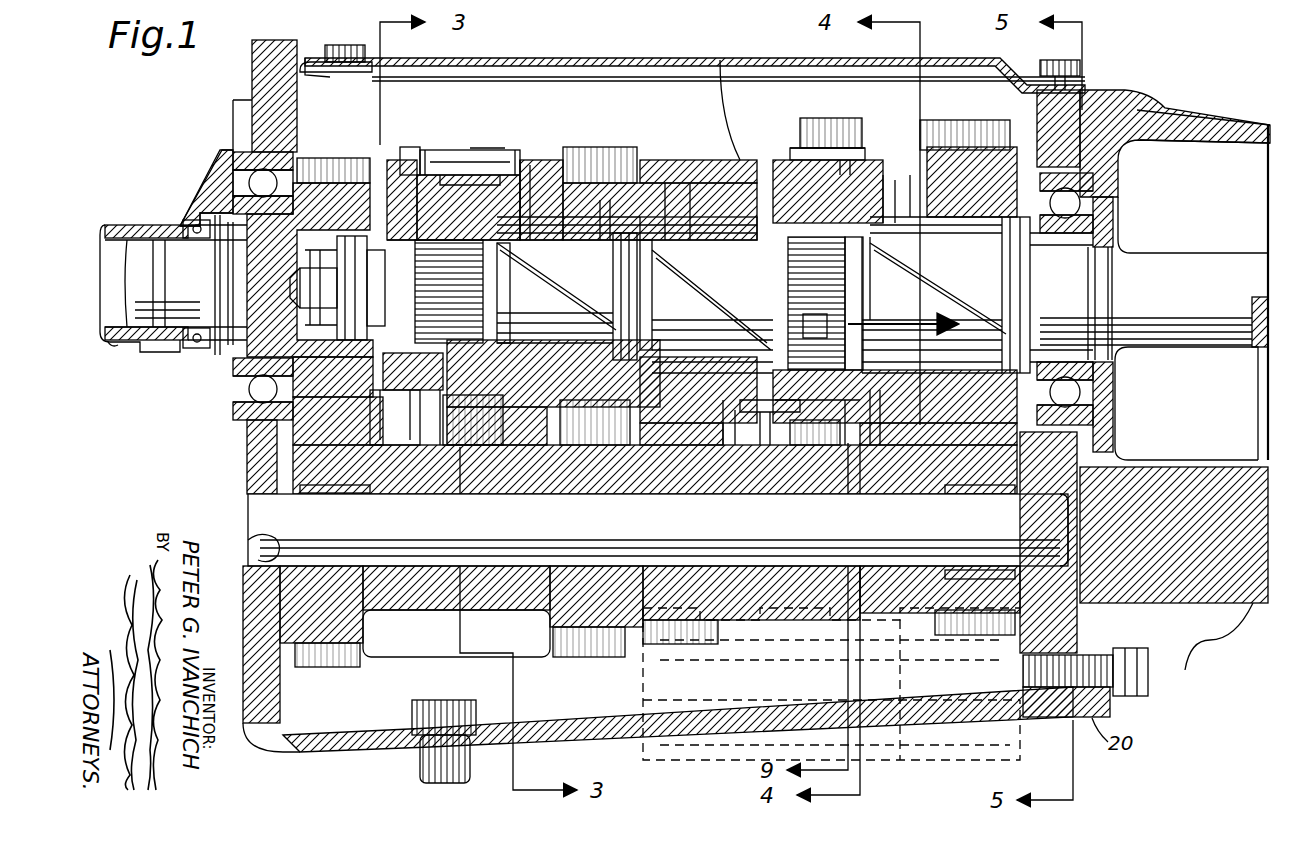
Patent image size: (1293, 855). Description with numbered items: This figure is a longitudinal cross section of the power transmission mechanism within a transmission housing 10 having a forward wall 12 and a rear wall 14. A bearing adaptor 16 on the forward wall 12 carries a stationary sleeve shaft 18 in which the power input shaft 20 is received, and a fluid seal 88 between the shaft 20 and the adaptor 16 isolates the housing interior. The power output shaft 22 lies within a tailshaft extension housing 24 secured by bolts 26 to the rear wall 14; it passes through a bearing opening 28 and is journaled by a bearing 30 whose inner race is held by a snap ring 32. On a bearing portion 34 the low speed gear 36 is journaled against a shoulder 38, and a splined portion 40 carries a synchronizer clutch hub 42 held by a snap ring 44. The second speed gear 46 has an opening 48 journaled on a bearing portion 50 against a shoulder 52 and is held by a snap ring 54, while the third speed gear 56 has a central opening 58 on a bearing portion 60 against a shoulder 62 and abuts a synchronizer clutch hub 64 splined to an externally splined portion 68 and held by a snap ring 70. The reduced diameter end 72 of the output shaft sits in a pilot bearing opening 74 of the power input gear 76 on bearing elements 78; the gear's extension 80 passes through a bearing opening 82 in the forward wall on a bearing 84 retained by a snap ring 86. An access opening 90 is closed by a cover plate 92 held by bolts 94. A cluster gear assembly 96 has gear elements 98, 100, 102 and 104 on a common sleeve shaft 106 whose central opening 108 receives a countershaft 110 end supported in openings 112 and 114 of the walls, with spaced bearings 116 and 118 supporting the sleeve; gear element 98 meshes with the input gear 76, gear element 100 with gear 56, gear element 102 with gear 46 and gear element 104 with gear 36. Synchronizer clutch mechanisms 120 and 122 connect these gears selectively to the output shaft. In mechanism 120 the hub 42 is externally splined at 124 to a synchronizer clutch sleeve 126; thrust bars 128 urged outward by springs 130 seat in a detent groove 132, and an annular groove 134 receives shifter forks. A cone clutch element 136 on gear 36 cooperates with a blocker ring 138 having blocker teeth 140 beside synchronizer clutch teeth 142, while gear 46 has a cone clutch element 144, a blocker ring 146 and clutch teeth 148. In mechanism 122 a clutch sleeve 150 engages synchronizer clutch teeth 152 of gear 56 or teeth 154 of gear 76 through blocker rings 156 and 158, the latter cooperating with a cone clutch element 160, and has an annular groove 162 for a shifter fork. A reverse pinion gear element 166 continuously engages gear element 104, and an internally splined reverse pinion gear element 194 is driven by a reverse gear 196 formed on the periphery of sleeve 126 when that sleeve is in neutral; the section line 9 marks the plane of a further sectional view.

The section line 9- 9 is at (826, 336).
The transmission housing 10 is at (248, 81).
The forward wall 12 is at (250, 478).
The rear wall 14 is at (1110, 155).
The bearing adaptor 16 is at (190, 222).
The stationary sleeve shaft 18 is at (130, 226).
The power input shaft 20 is at (140, 342).
The power output shaft 22 is at (1225, 250).
The tailshaft extension housing 24 is at (1222, 125).
The bolts 26 is at (1130, 665).
The bearing opening 28 is at (1097, 418).
The bearing 30 is at (1098, 388).
The snap ring 32 is at (1098, 228).
The bearing portion 34 is at (990, 268).
The low speed gear 36 is at (965, 120).
The shoulder 38 is at (1000, 222).
The splined portion 40 is at (795, 275).
The synchronizer clutch hub 42 is at (852, 445).
The snap ring 44 is at (770, 340).
The second speed gear 46 is at (660, 162).
The opening 48 is at (692, 190).
The bearing portion 50 is at (668, 185).
The shoulder 52 is at (740, 222).
The snap ring 54 is at (648, 250).
The third speed gear 56 is at (578, 150).
The central opening 58 is at (605, 205).
The bearing portion 60 is at (585, 190).
The shoulder 62 is at (618, 240).
The synchronizer clutch hub 64 is at (462, 447).
The externally splined portion 68 is at (485, 295).
The snap ring 70 is at (410, 400).
The reduced diameter end 72 is at (372, 252).
The pilot bearing opening 74 is at (352, 240).
The power input gear 76 is at (320, 165).
The bearing elements 78 is at (340, 260).
The extension 80 is at (240, 272).
The bearing opening 82 is at (255, 172).
The bearing 84 is at (258, 182).
The snap ring 86 is at (240, 375).
The fluid seal 88 is at (180, 226).
The access opening 90 is at (1045, 80).
The cover plate 92 is at (612, 60).
The bolts 94 is at (344, 46).
The cluster gear assembly 96 is at (435, 640).
The first gear element 98 is at (360, 660).
The gear element 100 is at (570, 657).
The gear element 102 is at (655, 645).
The gear element 104 is at (975, 630).
The common sleeve shaft 106 is at (485, 610).
The central opening 108 is at (550, 495).
The countershaft 110 is at (262, 506).
The opening 112 is at (262, 545).
The opening 114 is at (1045, 566).
The bearing 116 is at (955, 500).
The bearing 118 is at (325, 490).
The synchronizer clutch mechanism 120 is at (798, 118).
The synchronizer clutch mechanism 122 is at (488, 148).
The external splines 124 is at (825, 447).
The synchronizer clutch sleeve 126 is at (805, 430).
The synchronizer thrust bars 128 is at (872, 226).
The radially expanding springs 130 is at (785, 165).
The detent groove 132 is at (826, 118).
The annular groove 134 is at (845, 160).
The synchronizer cone clutch element 136 is at (865, 373).
The blocker ring 138 is at (884, 440).
The synchronizer blocker teeth 140 is at (890, 178).
The synchronizer clutch teeth 142 is at (915, 178).
The cone clutch element 144 is at (755, 430).
The blocker ring 146 is at (780, 430).
The synchronizer clutch teeth 148 is at (735, 430).
The clutch sleeve 150 is at (478, 148).
The synchronizer clutch teeth 152 is at (510, 178).
The synchronizer clutch teeth 154 is at (398, 165).
The blocker ring 156 is at (528, 165).
The synchronizer blocker ring 158 is at (432, 178).
The cone clutch element 160 is at (440, 400).
The peripheral annular groove 162 is at (410, 150).
The reverse pinion gear element 166 is at (920, 750).
The reverse pinion gear element 194 is at (785, 645).
The reverse gear 196 is at (722, 60).